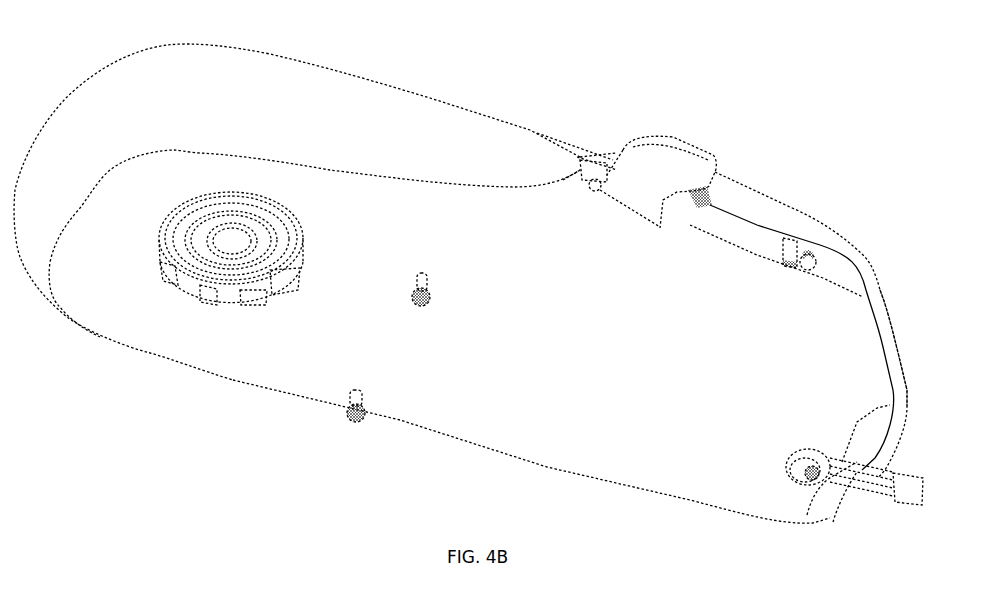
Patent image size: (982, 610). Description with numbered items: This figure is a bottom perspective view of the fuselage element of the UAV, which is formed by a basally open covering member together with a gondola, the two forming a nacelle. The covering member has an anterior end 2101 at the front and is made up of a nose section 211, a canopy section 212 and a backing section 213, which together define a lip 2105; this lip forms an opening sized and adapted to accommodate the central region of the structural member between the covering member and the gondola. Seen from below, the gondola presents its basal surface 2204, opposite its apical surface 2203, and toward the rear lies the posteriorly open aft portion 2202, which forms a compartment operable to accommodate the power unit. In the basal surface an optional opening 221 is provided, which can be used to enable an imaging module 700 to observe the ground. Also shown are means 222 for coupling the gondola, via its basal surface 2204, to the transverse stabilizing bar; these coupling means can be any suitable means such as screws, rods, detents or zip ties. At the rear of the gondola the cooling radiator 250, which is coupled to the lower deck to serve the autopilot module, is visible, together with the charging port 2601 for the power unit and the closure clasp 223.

The nose section 211 is at (193, 53).
The anterior end 2101 is at (297, 212).
The lip 2105 is at (600, 160).
The cooling radiator 250 is at (661, 182).
The canopy section 212 is at (740, 195).
The apical surface 2203 is at (733, 243).
The imaging module 700 is at (223, 247).
The opening 221 is at (252, 298).
The means for coupling 222 is at (363, 405).
The basal surface 2204 is at (531, 446).
The backing section 213 is at (897, 348).
The posteriorly open aft portion 2202 is at (863, 453).
The closure clasp 223 is at (787, 462).
The charging port 2601 is at (907, 492).